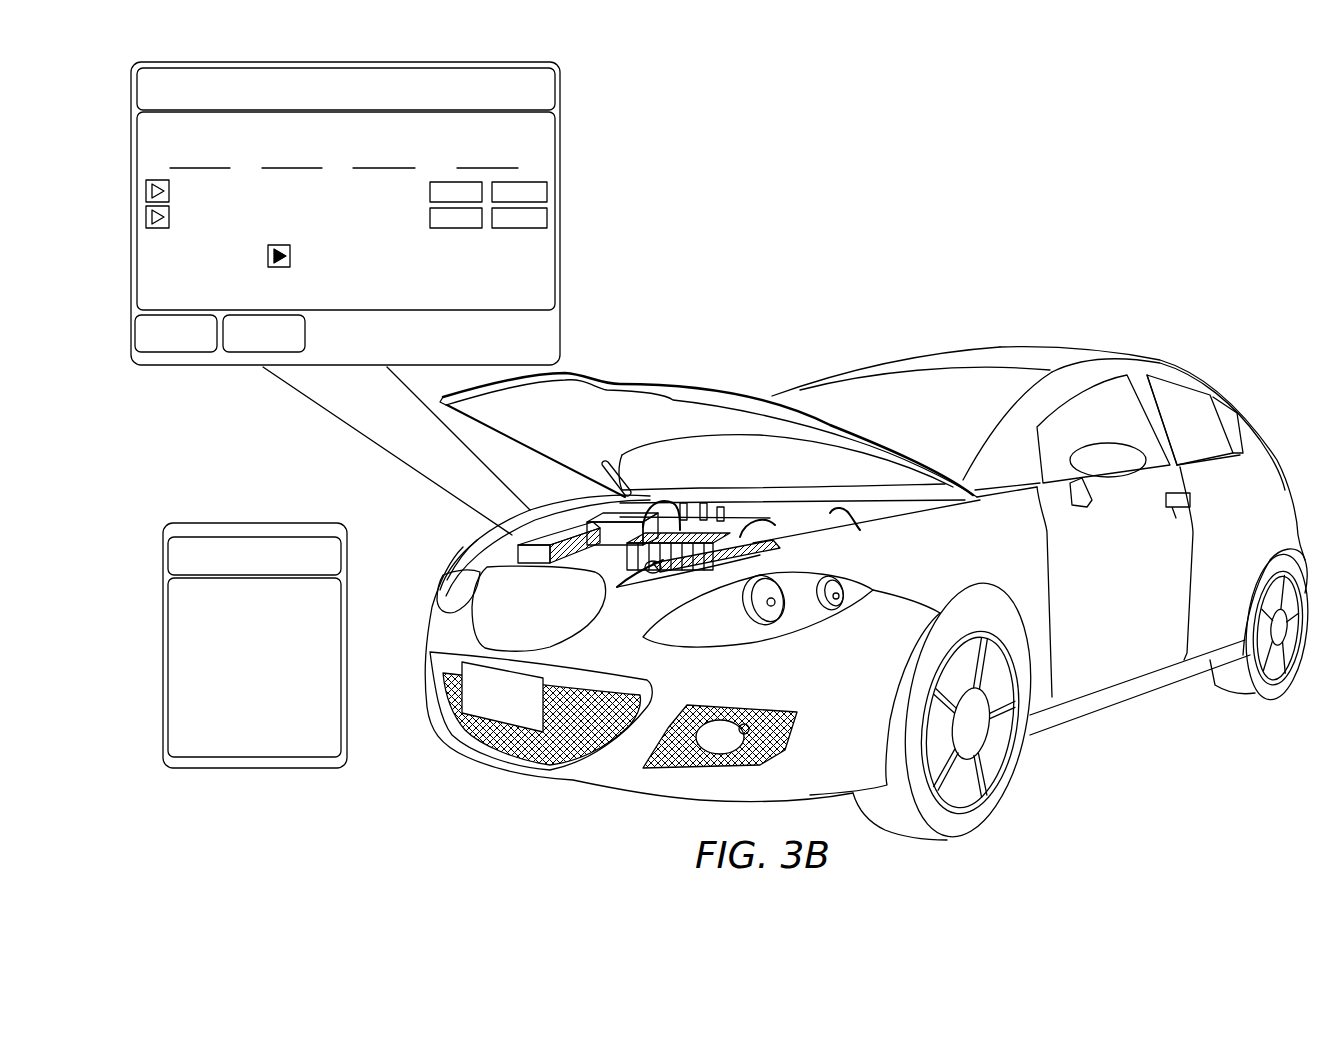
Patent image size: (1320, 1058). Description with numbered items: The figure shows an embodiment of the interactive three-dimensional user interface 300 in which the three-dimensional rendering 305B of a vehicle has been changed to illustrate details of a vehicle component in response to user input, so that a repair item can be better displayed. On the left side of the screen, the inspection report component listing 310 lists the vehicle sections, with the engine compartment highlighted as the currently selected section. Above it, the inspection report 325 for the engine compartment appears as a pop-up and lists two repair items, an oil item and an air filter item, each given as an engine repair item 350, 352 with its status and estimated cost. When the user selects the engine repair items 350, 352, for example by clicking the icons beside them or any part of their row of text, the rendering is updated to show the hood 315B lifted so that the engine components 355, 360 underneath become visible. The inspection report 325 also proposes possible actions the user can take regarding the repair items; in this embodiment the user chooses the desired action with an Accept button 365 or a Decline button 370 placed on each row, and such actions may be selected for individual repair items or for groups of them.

The user interface 300 is at (1030, 137).
The 3D rendering 305B is at (905, 357).
The inspection report component listing 310 is at (278, 523).
The hood 315B is at (607, 378).
The inspection report 325 is at (565, 97).
The engine repair item 350 is at (143, 190).
The engine repair item 352 is at (143, 217).
The engine component 355 is at (497, 532).
The engine component 360 is at (822, 558).
The Accept button 365 is at (437, 230).
The Decline button 370 is at (497, 230).